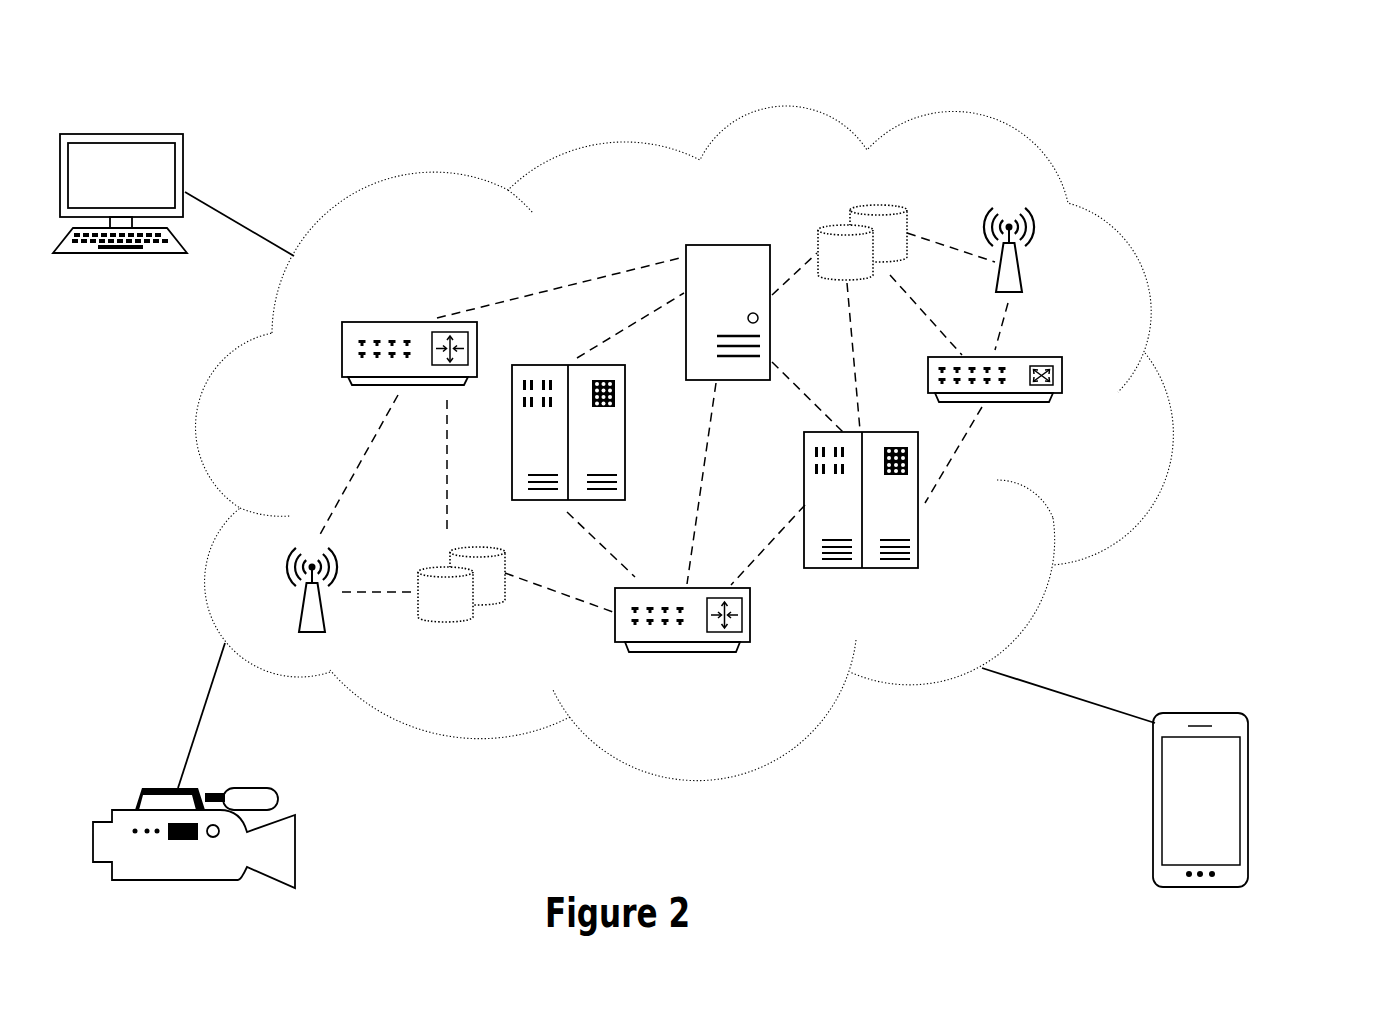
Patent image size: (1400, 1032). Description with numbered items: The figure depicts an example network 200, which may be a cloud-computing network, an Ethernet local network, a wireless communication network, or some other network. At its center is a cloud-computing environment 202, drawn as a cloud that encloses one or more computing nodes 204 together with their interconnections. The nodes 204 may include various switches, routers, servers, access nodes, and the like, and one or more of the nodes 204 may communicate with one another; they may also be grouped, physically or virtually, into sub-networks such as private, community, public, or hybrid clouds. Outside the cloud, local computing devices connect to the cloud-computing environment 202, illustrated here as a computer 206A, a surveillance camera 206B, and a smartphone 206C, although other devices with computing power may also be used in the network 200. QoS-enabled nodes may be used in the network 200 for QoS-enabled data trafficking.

The network 200 is at (719, 477).
The cloud-computing environment 202 is at (736, 443).
The computing node 204 is at (1020, 432).
The computer 206A is at (173, 214).
The surveillance camera 206B is at (194, 790).
The smartphone 206C is at (1115, 801).